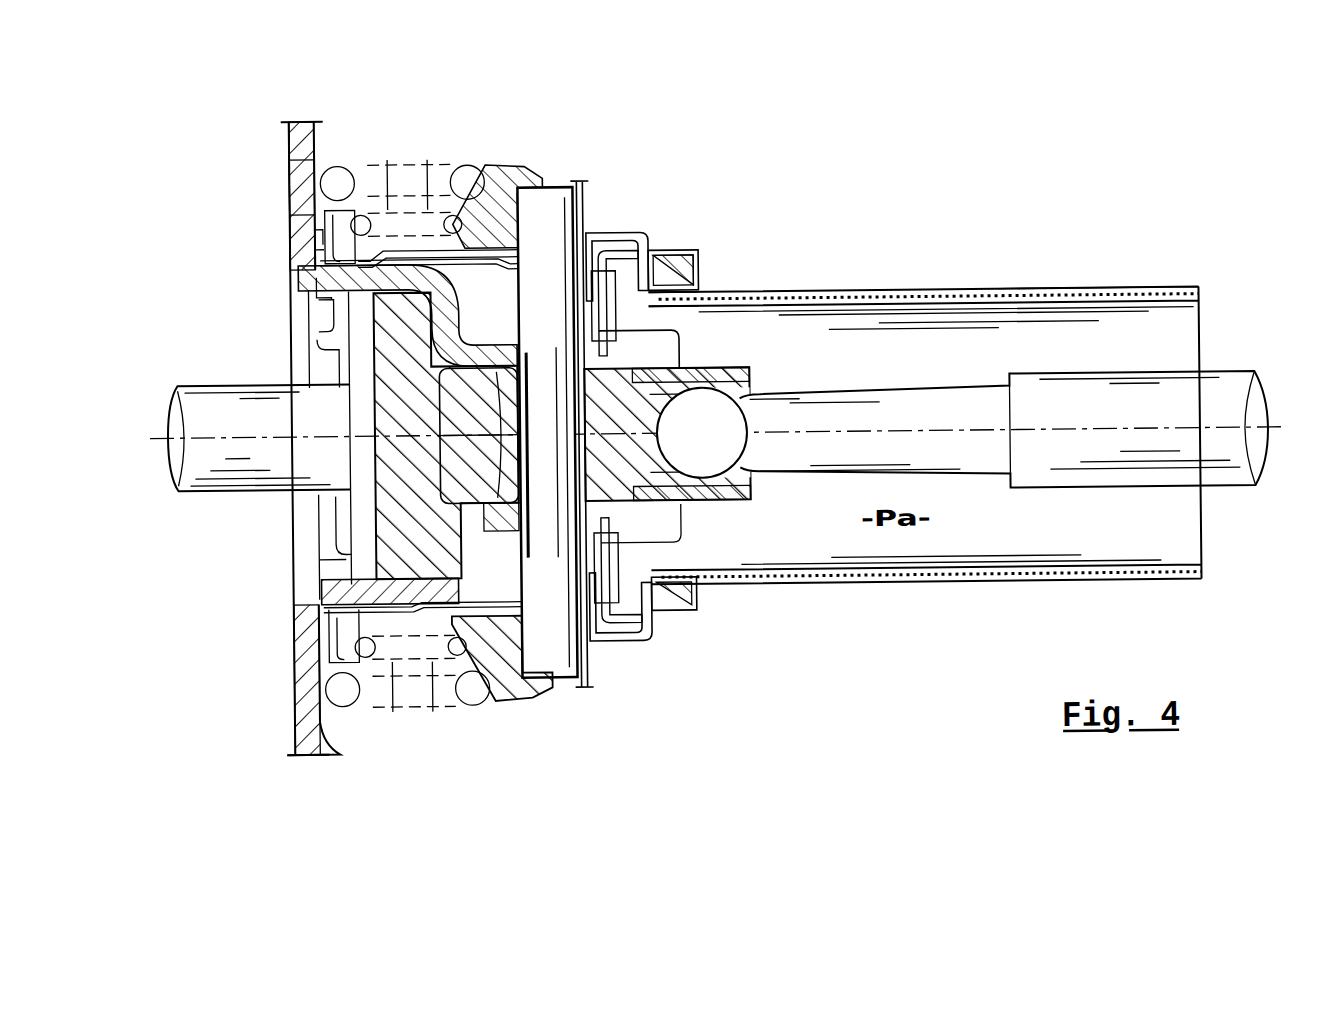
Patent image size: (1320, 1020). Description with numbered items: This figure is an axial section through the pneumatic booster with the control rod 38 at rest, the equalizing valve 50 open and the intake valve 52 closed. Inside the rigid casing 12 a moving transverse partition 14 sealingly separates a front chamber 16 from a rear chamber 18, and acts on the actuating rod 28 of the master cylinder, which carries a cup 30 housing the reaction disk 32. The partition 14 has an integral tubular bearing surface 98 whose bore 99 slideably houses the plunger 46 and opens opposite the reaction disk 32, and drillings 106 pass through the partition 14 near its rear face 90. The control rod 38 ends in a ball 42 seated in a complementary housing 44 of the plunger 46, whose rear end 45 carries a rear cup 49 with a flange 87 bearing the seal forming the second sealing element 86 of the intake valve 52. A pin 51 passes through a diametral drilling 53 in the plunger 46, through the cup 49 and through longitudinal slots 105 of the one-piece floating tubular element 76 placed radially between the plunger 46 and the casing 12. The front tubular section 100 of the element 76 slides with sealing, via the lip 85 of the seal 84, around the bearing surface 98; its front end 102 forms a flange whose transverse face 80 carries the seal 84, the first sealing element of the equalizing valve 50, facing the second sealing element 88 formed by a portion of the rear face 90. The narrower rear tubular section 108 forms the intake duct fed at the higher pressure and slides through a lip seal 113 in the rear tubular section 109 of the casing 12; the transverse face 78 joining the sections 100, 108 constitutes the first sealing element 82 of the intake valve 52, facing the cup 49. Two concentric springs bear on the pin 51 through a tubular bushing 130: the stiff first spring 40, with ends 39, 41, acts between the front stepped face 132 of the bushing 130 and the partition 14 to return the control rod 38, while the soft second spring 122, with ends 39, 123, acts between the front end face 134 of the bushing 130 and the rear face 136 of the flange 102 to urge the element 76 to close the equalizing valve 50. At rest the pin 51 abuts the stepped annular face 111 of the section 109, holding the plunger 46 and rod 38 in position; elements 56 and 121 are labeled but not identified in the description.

The casing 12 is at (617, 642).
The transverse partition 14 is at (292, 148).
The front chamber 16 is at (225, 196).
The rear chamber 18 is at (466, 120).
The actuating rod 28 is at (210, 405).
The cup 30 is at (363, 517).
The reaction disk 32 is at (357, 539).
The control rod 38 is at (967, 419).
The spring end 39 is at (343, 704).
The first spring 40 is at (325, 650).
The end of first spring 41 is at (471, 694).
The ball 42 is at (702, 432).
The housing 44 is at (759, 395).
The rear end of plunger 45 is at (754, 386).
The plunger 46 is at (657, 528).
The rear cup 49 is at (727, 573).
The equalizing valve 50 is at (292, 181).
The front pin 51 is at (555, 193).
The intake valve 52 is at (625, 320).
The drilling 53 is at (507, 510).
The shaft interface 56 is at (380, 400).
The floating tubular element 76 is at (889, 297).
The transverse front face 78 is at (655, 239).
The transverse front face 80 is at (323, 239).
The first sealing element for intake valve 82 is at (675, 266).
The first sealing element for equalizing valve 84 is at (334, 200).
The lip 85 is at (297, 278).
The second sealing element for intake valve 86 is at (602, 233).
The flange 87 is at (643, 621).
The second sealing element for equalizing valve 88 is at (293, 214).
The rear face 90 is at (305, 722).
The tubular bearing surface 98 is at (307, 341).
The bore 99 is at (383, 475).
The front tubular section 100 is at (398, 217).
The front end 102 is at (293, 251).
The longitudinal slots 105 is at (489, 260).
The communication drilling 106 is at (318, 319).
The rear tubular section 108 is at (992, 297).
The rear tubular section of casing 109 is at (642, 233).
The stepped annular face 111 is at (582, 233).
The lip seal 113 is at (692, 280).
The bearing ball 121 is at (390, 660).
The second spring 122 is at (510, 698).
The end of second spring 123 is at (453, 661).
The tubular bushing 130 is at (520, 190).
The front stepped face 132 is at (493, 166).
The front end face 134 is at (465, 168).
The rear face 136 is at (377, 226).